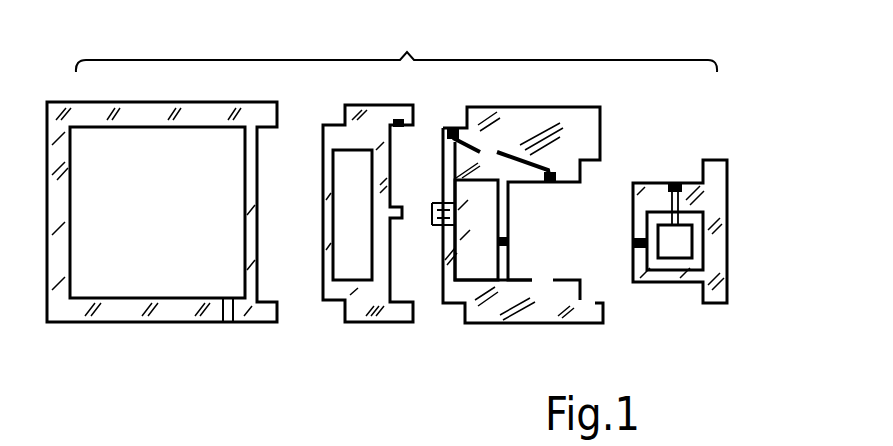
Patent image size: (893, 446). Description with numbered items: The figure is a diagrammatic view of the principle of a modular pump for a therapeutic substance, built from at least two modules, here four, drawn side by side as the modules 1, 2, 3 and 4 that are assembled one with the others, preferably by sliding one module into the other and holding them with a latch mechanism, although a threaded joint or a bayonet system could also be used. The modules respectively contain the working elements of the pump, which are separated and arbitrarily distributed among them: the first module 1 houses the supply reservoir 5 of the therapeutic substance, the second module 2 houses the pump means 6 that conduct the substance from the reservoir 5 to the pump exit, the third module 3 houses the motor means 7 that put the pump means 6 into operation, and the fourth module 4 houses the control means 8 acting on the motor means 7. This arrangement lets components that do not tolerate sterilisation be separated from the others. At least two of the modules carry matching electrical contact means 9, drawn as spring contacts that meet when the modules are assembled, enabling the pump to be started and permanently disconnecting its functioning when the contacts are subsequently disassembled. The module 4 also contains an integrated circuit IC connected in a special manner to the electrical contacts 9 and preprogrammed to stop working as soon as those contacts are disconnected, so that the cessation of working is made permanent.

The module 1 is at (63, 303).
The supply reservoir 5 is at (165, 258).
The module 2 is at (363, 300).
The pump means 6 is at (352, 248).
The module 3 is at (530, 308).
The motor means 7 is at (475, 252).
The electrical contact means 9 is at (453, 128).
The module 4 is at (717, 295).
The control means 8 is at (652, 255).
The integrated circuit IC is at (675, 243).